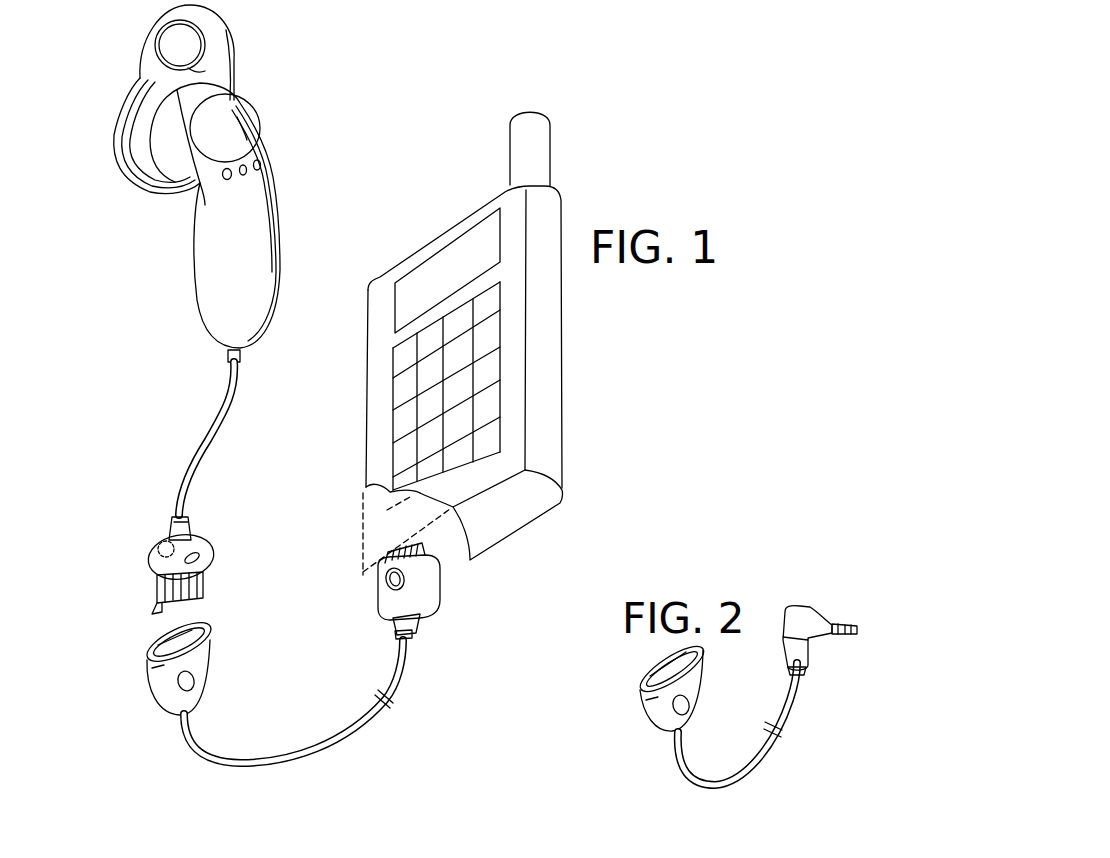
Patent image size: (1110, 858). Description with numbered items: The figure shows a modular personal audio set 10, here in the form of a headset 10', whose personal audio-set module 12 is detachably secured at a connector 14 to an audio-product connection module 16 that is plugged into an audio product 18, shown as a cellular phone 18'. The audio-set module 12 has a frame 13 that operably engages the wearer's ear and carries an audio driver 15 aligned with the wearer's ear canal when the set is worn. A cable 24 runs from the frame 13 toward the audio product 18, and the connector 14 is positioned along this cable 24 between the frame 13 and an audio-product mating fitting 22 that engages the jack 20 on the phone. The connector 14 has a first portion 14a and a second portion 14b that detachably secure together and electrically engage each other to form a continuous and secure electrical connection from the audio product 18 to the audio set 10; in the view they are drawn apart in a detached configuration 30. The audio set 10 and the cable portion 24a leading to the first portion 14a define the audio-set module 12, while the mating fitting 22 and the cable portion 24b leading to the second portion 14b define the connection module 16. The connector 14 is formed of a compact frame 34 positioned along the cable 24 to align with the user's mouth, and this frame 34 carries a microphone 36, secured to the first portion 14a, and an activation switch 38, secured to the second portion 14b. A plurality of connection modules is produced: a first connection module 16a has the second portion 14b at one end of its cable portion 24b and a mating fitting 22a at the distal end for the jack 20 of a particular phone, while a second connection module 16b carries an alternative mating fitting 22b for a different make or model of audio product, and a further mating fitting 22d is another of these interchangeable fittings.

In FIG. 1, the modular personal audio set 10 is at (311, 427).
In FIG. 1, the headset 10' is at (253, 222).
In FIG. 1, the personal audio-set module 12 is at (117, 611).
In FIG. 1, the frame 13 is at (232, 286).
In FIG. 1, the connector 14 is at (238, 675).
In FIG. 1, the first portion 14a is at (153, 546).
In FIG. 1, the second portion 14b is at (167, 698).
In FIG. 2, the second portion 14b is at (695, 716).
In FIG. 1, the audio driver 15 is at (141, 166).
In FIG. 1, the audio-product connection module 16 is at (122, 658).
In FIG. 1, the audio-product connection module 16a is at (217, 770).
In FIG. 2, the audio-product connection module 16b is at (793, 723).
In FIG. 1, the audio product 18 is at (436, 345).
In FIG. 1, the cellular phone 18' is at (405, 349).
In FIG. 1, the jack 20 is at (444, 560).
In FIG. 1, the audio-product mating fitting 22 is at (427, 620).
In FIG. 1, the mating fitting 22a is at (376, 572).
In FIG. 2, the mating fitting 22b is at (843, 592).
In FIG. 2, the mating fitting 22d is at (874, 847).
In FIG. 1, the cable 24 is at (211, 417).
In FIG. 1, the cable portion 24a is at (219, 434).
In FIG. 1, the cable portion 24b is at (273, 765).
In FIG. 2, the cable portion 24b is at (753, 760).
In FIG. 1, the detached configuration 30 is at (131, 636).
In FIG. 1, the compact frame 34 is at (207, 582).
In FIG. 2, the compact frame 34 is at (643, 687).
In FIG. 1, the microphone 36 is at (217, 554).
In FIG. 1, the activation switch 38 is at (196, 686).
In FIG. 2, the activation switch 38 is at (660, 727).